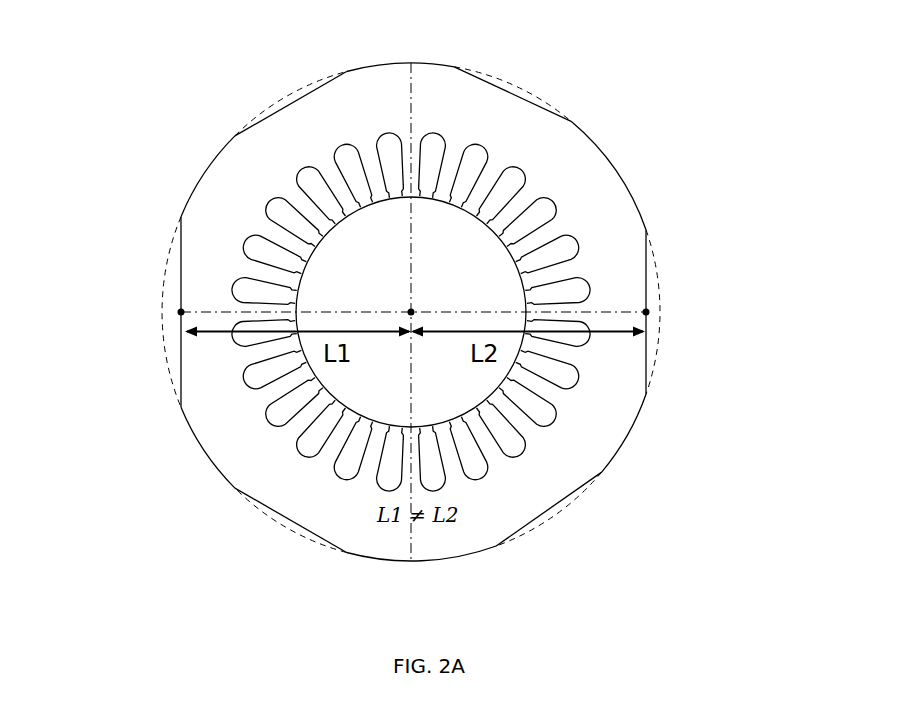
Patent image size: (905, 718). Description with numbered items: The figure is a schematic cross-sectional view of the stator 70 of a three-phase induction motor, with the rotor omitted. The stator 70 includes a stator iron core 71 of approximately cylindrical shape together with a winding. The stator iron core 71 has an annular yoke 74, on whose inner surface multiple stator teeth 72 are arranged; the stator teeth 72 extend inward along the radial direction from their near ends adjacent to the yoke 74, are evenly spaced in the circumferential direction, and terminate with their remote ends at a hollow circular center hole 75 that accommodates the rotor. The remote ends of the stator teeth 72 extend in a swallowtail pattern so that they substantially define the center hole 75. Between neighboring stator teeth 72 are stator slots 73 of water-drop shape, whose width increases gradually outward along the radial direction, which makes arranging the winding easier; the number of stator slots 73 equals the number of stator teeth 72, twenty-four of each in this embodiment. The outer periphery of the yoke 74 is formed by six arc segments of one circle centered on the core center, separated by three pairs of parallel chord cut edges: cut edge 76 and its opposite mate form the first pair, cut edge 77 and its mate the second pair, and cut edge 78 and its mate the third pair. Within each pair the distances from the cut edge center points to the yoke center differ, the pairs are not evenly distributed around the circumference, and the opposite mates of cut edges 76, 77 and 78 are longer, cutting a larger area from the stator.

The stator 70 is at (510, 553).
The stator iron core 71 is at (555, 395).
The stator teeth 72 is at (310, 413).
The stator slots 73 is at (353, 458).
The yoke 74 is at (600, 193).
The center hole 75 is at (370, 273).
The cut edge 76 is at (655, 275).
The cut edge 77 is at (532, 100).
The cut edge 78 is at (545, 515).